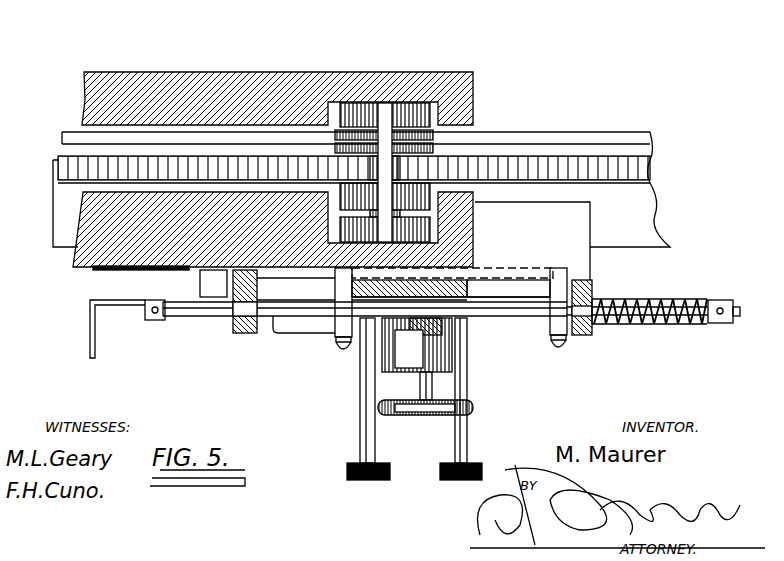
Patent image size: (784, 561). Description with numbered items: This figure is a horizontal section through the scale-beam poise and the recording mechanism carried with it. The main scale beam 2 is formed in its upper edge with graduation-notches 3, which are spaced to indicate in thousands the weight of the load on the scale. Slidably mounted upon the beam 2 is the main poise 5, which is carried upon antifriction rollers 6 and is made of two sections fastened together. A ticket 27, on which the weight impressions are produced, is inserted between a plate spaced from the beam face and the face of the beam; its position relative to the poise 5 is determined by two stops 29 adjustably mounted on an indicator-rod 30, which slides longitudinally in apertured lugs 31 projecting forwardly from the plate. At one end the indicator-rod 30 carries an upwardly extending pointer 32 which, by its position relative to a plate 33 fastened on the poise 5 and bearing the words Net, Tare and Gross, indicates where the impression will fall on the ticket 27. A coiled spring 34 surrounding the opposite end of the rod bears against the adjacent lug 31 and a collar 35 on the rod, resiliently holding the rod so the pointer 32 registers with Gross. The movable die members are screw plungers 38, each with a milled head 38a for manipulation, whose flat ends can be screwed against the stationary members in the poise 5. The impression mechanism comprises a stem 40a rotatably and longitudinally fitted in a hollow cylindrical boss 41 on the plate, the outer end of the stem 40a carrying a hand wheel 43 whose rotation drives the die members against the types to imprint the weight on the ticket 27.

The main scale beam 2 is at (53, 200).
The graduation-notches 3 is at (60, 160).
The main poise 5 is at (205, 71).
The antifriction rollers 6 is at (478, 115).
The tickets 27 is at (505, 275).
The stops 29 is at (333, 326).
The indicator-rod 30 is at (486, 318).
The apertured lugs 31 is at (236, 326).
The pointer 32 is at (154, 322).
The plate 33 is at (160, 281).
The coiled spring 34 is at (655, 298).
The collar 35 is at (272, 330).
The screw plunger 38 is at (360, 418).
The milled head 38a is at (450, 482).
The stem 40a is at (432, 388).
The boss 41 is at (417, 345).
The hand wheel 43 is at (402, 416).